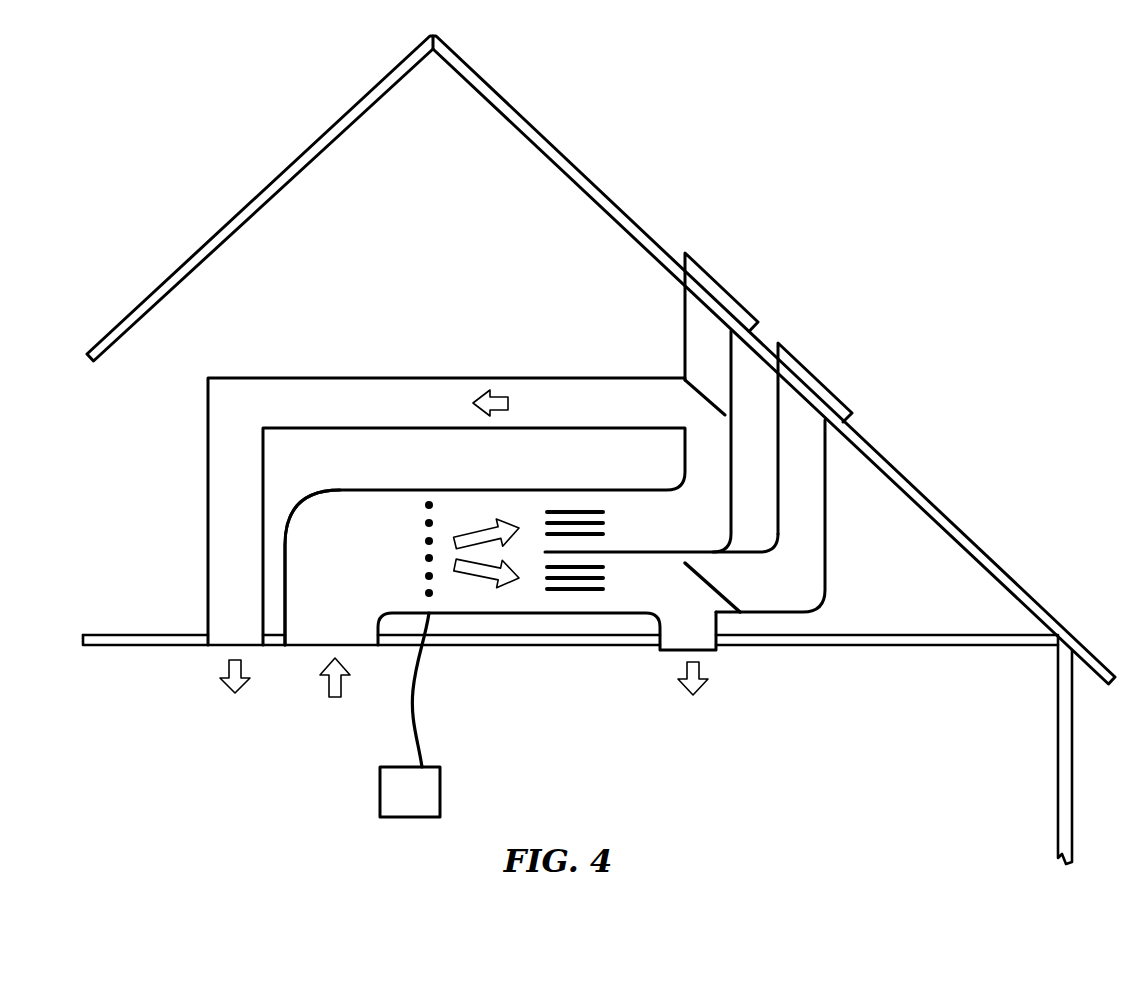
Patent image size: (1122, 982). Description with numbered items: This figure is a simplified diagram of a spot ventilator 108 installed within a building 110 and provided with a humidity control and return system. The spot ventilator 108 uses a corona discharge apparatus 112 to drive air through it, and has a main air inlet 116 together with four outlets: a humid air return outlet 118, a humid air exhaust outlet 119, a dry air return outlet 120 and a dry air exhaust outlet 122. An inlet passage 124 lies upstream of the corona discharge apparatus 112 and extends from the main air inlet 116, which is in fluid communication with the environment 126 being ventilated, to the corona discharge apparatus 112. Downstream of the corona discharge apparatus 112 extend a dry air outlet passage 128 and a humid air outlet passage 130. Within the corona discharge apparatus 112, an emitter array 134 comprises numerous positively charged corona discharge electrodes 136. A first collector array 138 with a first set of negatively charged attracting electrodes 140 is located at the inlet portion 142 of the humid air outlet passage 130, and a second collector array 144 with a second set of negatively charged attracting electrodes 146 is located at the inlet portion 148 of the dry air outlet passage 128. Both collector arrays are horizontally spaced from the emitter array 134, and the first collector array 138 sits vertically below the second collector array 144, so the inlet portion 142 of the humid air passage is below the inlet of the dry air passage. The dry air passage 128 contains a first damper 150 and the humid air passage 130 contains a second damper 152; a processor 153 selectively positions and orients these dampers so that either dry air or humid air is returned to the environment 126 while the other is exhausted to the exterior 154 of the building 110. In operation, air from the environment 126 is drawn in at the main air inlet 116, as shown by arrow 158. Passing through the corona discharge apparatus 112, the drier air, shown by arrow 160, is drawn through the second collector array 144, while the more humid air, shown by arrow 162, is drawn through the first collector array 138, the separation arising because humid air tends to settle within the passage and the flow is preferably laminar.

The spot ventilator 108 is at (425, 331).
The building 110 is at (572, 163).
The corona discharge apparatus 112 is at (495, 615).
The main air inlet 116 is at (352, 653).
The humid air return outlet 118 is at (716, 650).
The humid air exhaust outlet 119 is at (815, 373).
The dry air return outlet 120 is at (237, 627).
The dry air exhaust outlet 122 is at (725, 292).
The inlet passage 124 is at (310, 625).
The environment 126 is at (821, 821).
The dry air outlet passage 128 is at (328, 378).
The humid air outlet passage 130 is at (800, 478).
The emitter array 134 is at (391, 552).
The corona discharge electrodes 136 is at (424, 523).
The first collector array 138 is at (572, 618).
The first set of negatively charged attracting electrodes 140 is at (603, 578).
The inlet portion of the humid air outlet passage 142 is at (543, 575).
The second collector array 144 is at (573, 485).
The second set of negatively charged attracting electrodes 146 is at (543, 537).
The inlet portion of the dry air outlet passage 148 is at (545, 518).
The first damper 150 is at (703, 395).
The second damper 152 is at (720, 588).
The processor 153 is at (443, 784).
The exterior of the building 154 is at (849, 166).
The arrow 158 is at (335, 700).
The arrow 160 is at (455, 538).
The arrow 162 is at (465, 605).